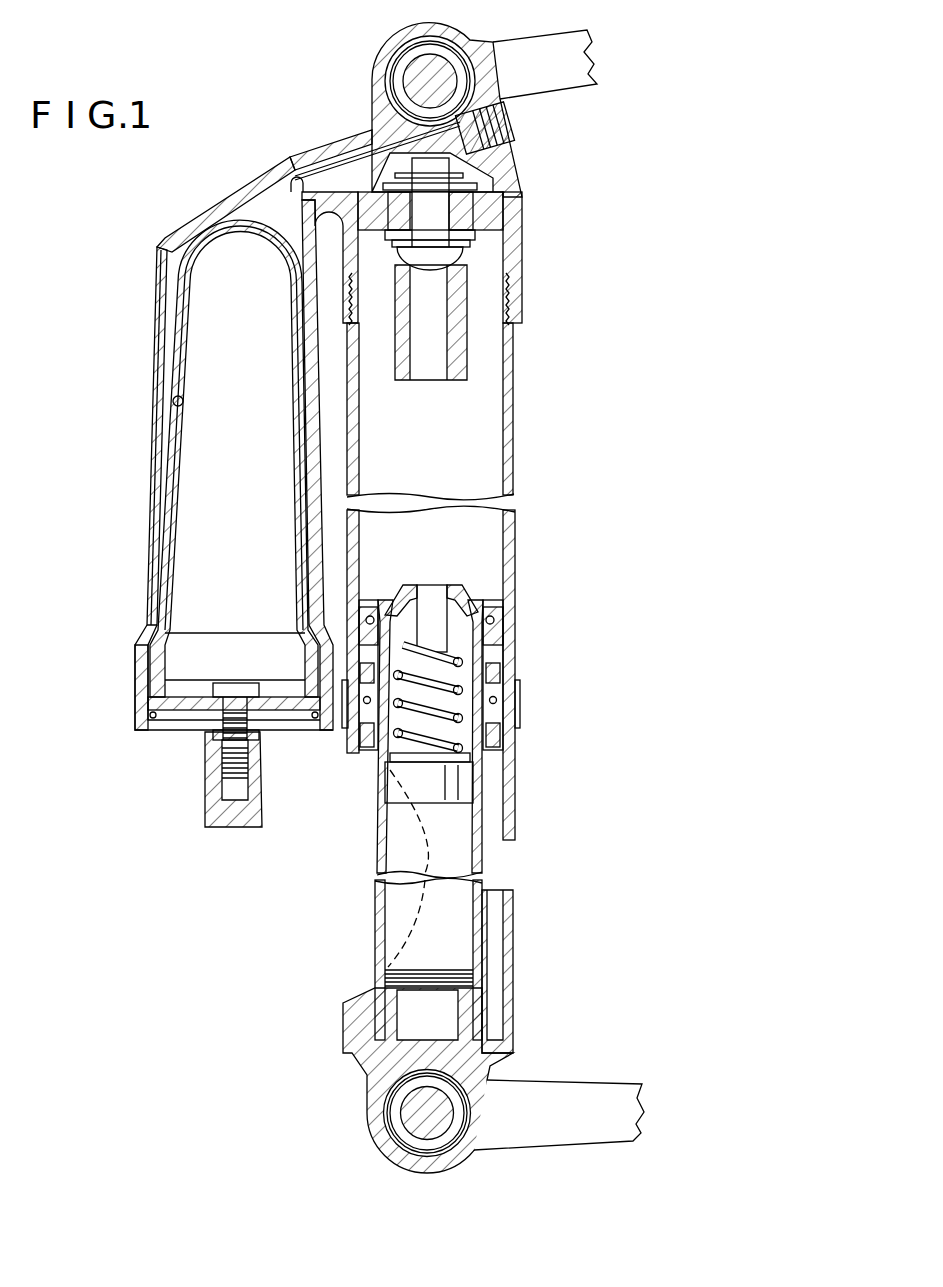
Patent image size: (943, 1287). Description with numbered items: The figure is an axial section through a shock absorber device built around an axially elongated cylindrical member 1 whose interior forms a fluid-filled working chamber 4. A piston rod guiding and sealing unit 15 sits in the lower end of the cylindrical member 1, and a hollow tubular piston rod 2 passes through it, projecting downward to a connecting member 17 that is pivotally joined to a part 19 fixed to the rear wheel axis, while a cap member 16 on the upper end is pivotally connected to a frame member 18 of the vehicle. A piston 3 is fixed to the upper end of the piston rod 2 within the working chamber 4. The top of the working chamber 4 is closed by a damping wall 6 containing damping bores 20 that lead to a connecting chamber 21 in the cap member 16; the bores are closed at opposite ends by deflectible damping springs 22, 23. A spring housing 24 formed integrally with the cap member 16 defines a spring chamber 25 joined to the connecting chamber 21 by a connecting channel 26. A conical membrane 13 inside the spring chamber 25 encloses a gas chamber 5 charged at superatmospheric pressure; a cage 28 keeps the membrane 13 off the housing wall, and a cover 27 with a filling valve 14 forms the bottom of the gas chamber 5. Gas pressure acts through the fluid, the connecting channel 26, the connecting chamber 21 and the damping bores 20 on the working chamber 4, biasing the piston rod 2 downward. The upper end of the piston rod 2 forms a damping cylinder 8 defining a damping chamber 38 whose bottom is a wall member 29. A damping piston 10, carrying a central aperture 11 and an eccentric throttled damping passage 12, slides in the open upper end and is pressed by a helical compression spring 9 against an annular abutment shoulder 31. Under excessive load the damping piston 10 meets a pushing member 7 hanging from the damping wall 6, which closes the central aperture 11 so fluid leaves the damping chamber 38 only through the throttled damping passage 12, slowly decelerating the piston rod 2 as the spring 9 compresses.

The cylindrical member 1 is at (515, 441).
The piston rod 2 is at (484, 823).
The piston 3 is at (501, 626).
The working chamber 4 is at (515, 337).
The gas chamber 5 is at (178, 593).
The damping wall 6 is at (472, 229).
The pushing member 7 is at (488, 346).
The damping cylinder 8 is at (468, 757).
The helical compression spring 9 is at (458, 690).
The damping piston 10 is at (464, 598).
The central aperture 11 is at (432, 598).
The throttled damping passage 12 is at (470, 604).
The membrane 13 is at (173, 400).
The filling valve 14 is at (216, 764).
The piston rod guiding and sealing unit 15 is at (490, 712).
The cap member 16 is at (518, 182).
The connecting member 17 is at (384, 1065).
The frame member 18 is at (583, 80).
The part 19 is at (579, 1091).
The damping bores 20 is at (370, 156).
The connecting chamber 21 is at (492, 180).
The damping spring 22 is at (521, 289).
The damping spring 23 is at (486, 170).
The spring housing 24 is at (210, 208).
The spring chamber 25 is at (273, 200).
The connecting channel 26 is at (330, 147).
The cover 27 is at (182, 712).
The cage 28 is at (165, 340).
The wall member 29 is at (463, 784).
The annular abutment shoulder 31 is at (397, 600).
The damping chamber 38 is at (440, 698).